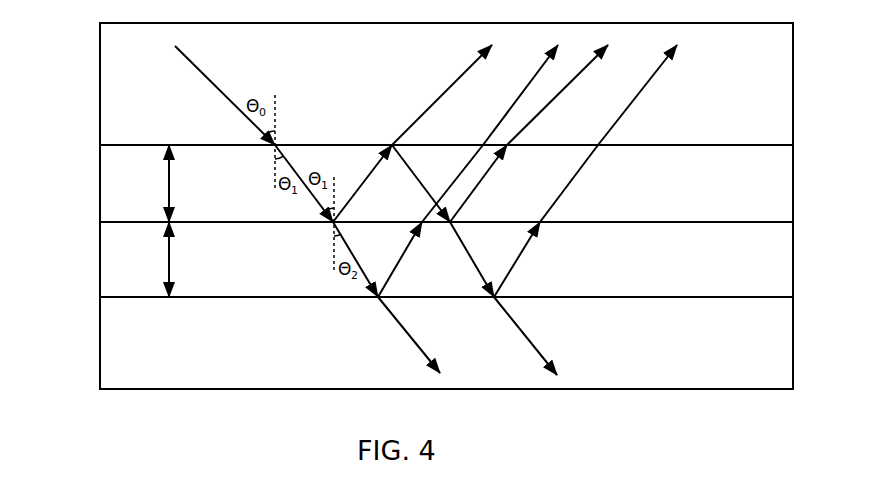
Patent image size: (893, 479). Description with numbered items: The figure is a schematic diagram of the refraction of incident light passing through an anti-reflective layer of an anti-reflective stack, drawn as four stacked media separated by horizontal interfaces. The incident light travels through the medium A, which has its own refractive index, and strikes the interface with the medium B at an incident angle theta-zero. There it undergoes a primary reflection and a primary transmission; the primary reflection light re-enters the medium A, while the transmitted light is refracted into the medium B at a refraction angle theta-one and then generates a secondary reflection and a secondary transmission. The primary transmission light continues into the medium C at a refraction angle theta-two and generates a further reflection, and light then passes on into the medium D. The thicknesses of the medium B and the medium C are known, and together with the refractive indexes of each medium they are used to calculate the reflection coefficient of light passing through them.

The medium A is at (125, 85).
The medium B is at (118, 186).
The medium C is at (118, 260).
The medium D is at (121, 338).